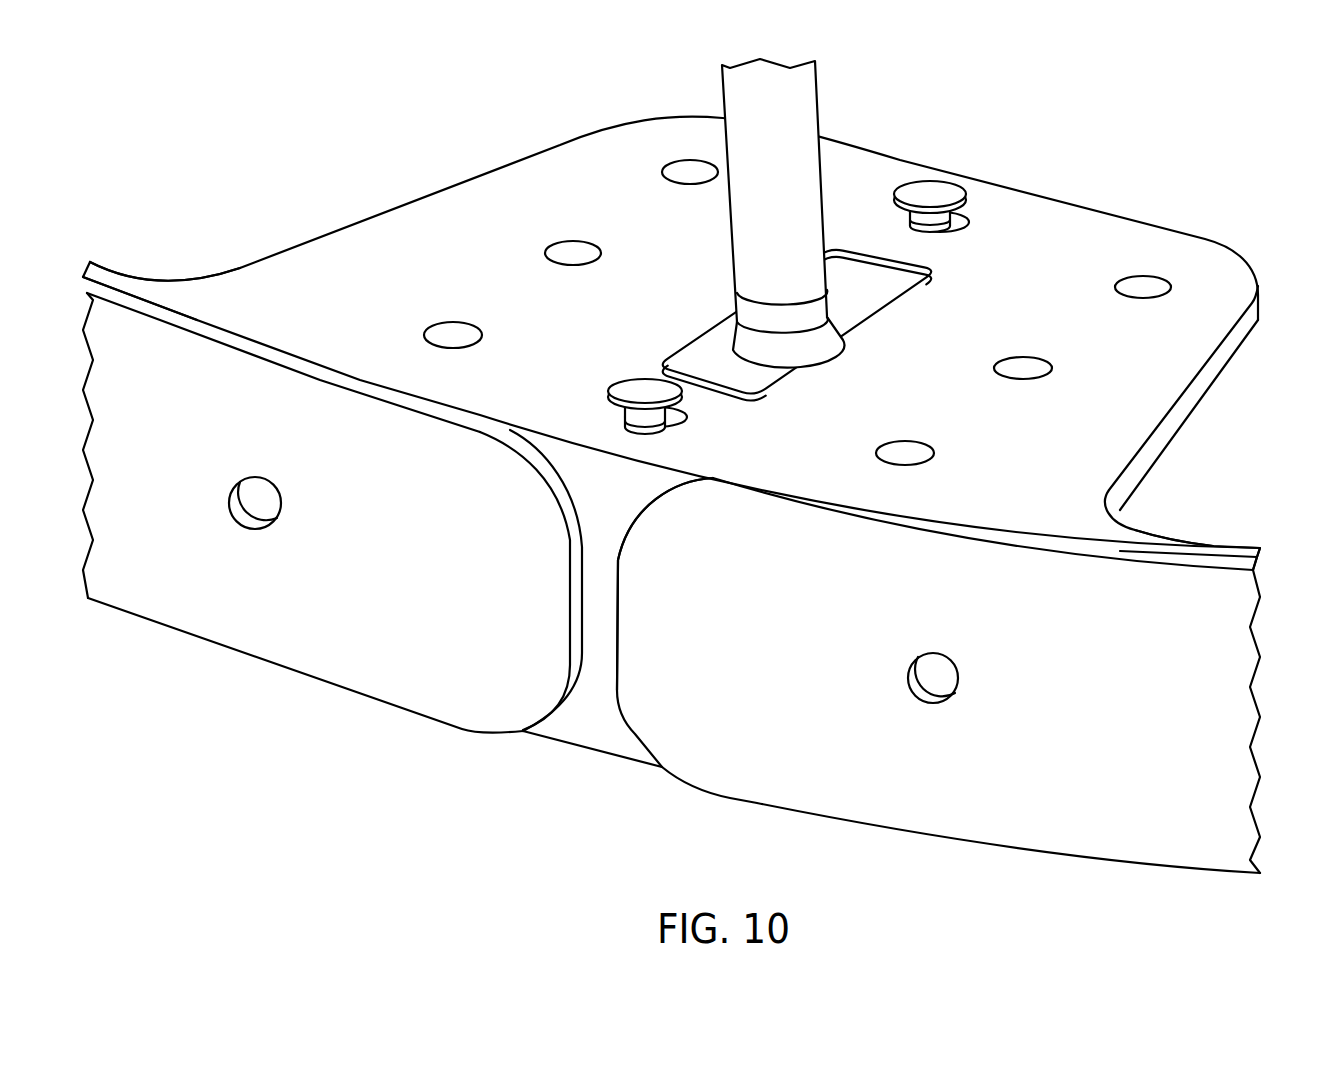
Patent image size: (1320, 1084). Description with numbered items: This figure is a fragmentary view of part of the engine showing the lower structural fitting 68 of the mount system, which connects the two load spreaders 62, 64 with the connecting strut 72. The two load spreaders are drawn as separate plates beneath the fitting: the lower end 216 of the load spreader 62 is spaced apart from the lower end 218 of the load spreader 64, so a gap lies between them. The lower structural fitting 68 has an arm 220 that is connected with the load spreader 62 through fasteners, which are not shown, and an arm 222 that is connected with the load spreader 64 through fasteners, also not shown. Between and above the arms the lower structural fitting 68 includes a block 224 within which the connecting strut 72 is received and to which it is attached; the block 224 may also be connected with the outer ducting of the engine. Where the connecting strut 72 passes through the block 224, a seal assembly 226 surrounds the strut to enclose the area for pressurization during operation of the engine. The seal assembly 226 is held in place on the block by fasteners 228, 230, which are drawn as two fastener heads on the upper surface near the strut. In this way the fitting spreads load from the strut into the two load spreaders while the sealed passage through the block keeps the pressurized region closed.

The load spreader 62 is at (433, 582).
The load spreader 64 is at (1129, 726).
The lower structural fitting 68 is at (1202, 378).
The connecting strut 72 is at (820, 85).
The lower end 216 is at (573, 620).
The lower end 218 is at (614, 647).
The arm 220 is at (147, 281).
The arm 222 is at (1222, 547).
The block 224 is at (1069, 322).
The seal assembly 226 is at (883, 298).
The fastener 228 is at (947, 189).
The fastener 230 is at (623, 387).